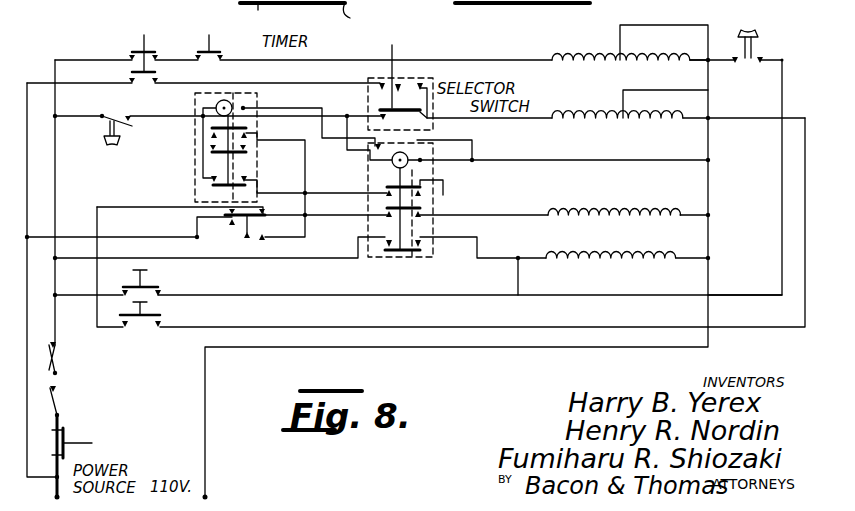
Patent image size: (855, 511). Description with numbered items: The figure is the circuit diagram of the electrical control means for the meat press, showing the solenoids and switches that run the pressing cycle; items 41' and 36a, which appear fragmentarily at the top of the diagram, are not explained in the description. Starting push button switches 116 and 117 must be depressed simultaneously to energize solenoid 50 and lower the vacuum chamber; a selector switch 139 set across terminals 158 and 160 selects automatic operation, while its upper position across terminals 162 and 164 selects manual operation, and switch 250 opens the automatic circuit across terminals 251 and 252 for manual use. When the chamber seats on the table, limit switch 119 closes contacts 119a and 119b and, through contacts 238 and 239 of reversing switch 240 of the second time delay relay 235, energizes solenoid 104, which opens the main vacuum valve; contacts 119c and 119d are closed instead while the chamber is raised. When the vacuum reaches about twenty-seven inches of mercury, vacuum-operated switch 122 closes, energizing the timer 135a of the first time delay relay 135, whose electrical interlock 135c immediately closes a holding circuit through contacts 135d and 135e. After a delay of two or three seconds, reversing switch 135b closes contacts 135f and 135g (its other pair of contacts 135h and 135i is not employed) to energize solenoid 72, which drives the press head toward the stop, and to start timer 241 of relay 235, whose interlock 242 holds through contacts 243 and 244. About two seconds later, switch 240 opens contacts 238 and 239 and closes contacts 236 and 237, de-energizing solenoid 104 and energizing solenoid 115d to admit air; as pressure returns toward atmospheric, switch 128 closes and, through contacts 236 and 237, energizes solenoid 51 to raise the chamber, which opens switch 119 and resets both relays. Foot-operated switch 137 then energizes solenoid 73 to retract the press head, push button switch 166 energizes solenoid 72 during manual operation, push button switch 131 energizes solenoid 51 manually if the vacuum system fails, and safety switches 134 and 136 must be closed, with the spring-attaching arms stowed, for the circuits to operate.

The push button switch 116 is at (144, 35).
The push button switch 117 is at (209, 35).
The control panel portion 41' is at (250, 18).
The panel portion 36a is at (409, 14).
The push button switch 166 is at (132, 72).
The automatic switch 122 is at (110, 112).
The first time delay relay 135 is at (225, 93).
The timer 135a is at (245, 106).
The double-throw reversing switch 135b is at (213, 185).
The electrical interlock 135c is at (208, 125).
The contact 135d is at (213, 134).
The contact 135e is at (248, 130).
The contact 135f is at (213, 179).
The contact 135g is at (246, 181).
The contact 135h is at (212, 150).
The contact 135i is at (245, 150).
The selector switch 139 is at (396, 30).
The terminal 158 is at (428, 118).
The terminal 160 is at (381, 116).
The terminal 162 is at (382, 84).
The terminal 164 is at (420, 84).
The solenoid 50 is at (555, 56).
The solenoid 51 is at (680, 58).
The switch 128 is at (757, 45).
The solenoid 72 is at (562, 124).
The solenoid 73 is at (665, 124).
The solenoid 104 is at (662, 208).
The solenoid 115d is at (650, 262).
The second time delay relay 235 is at (436, 210).
The timer 241 is at (408, 157).
The electrical interlock 242 is at (376, 150).
The contact 243 is at (386, 192).
The contact 244 is at (422, 195).
The contact 238 is at (386, 213).
The contact 239 is at (430, 215).
The double-throw reversing switch 240 is at (392, 240).
The contact 237 is at (421, 257).
The contact 236 is at (372, 258).
The limit switch 119 is at (246, 236).
The contact 119a is at (232, 225).
The contact 119b is at (264, 238).
The contact 119c is at (232, 212).
The contact 119d is at (264, 210).
The push button switch 131 is at (145, 280).
The switch 137 is at (146, 319).
The safety switch 136 is at (56, 348).
The safety switch 134 is at (58, 390).
The switch 250 is at (97, 438).
The terminal 251 is at (57, 432).
The terminal 252 is at (57, 456).